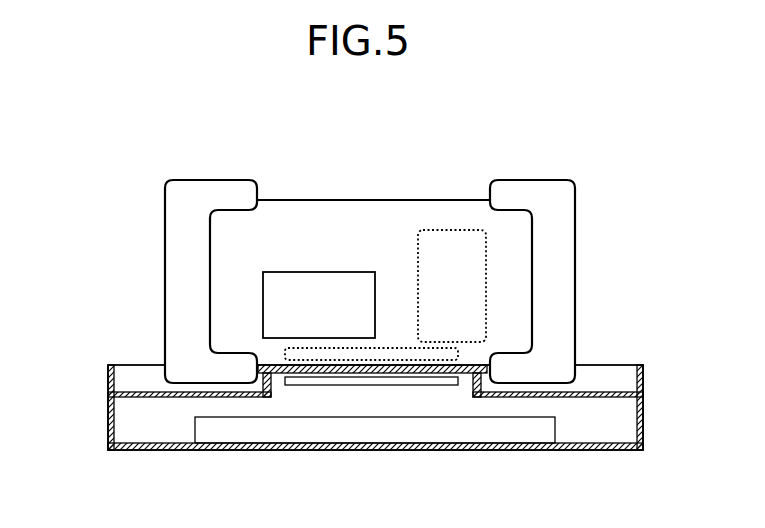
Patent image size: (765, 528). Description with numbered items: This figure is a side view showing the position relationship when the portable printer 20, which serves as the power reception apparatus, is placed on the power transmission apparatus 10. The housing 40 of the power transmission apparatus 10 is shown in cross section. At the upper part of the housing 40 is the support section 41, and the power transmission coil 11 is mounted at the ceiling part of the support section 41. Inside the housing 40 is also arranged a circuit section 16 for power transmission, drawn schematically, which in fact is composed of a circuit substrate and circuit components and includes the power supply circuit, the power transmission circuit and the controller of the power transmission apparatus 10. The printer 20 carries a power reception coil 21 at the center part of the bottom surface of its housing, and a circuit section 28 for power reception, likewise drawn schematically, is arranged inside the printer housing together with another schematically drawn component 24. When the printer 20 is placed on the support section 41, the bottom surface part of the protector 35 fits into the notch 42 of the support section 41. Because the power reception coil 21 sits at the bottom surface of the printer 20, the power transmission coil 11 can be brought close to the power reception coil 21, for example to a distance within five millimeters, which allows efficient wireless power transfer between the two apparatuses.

The power transmission apparatus 10 is at (279, 452).
The power transmission coil 11 is at (377, 385).
The circuit section for power transmission 16 is at (475, 427).
The printer 20 is at (376, 262).
The power reception coil 21 is at (400, 344).
The battery 24 is at (308, 287).
The circuit section for power reception 28 is at (457, 231).
The protector 35 is at (185, 268).
The housing 40 is at (108, 413).
The support section 41 is at (428, 377).
The notch 42 is at (152, 380).